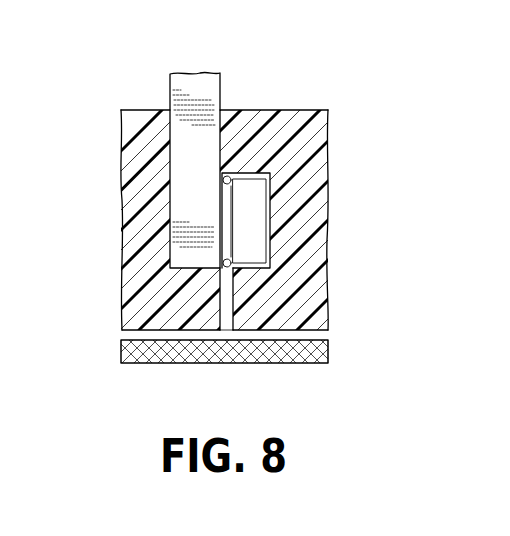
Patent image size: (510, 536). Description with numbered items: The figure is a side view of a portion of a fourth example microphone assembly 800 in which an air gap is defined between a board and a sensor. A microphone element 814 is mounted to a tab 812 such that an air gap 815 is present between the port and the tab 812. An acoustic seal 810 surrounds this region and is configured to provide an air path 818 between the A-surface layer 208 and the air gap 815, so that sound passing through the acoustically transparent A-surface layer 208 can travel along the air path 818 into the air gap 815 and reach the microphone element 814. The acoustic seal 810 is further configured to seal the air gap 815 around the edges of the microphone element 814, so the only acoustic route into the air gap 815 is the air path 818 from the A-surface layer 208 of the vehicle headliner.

The connector assembly 800 is at (283, 83).
The acoustic seal 810 is at (121, 228).
The tab 812 is at (169, 138).
The microphone element 814 is at (258, 220).
The air gap 815 is at (223, 225).
The A-surface layer 208 is at (121, 345).
The air path 818 is at (227, 330).